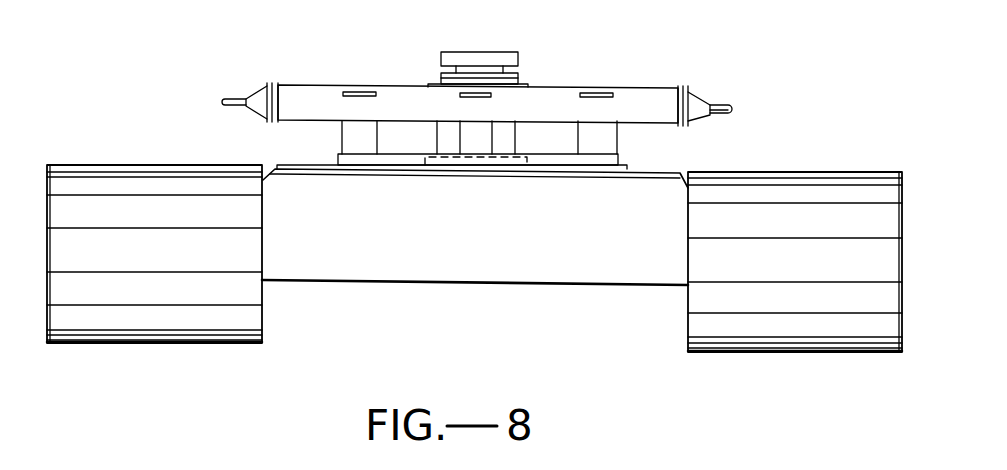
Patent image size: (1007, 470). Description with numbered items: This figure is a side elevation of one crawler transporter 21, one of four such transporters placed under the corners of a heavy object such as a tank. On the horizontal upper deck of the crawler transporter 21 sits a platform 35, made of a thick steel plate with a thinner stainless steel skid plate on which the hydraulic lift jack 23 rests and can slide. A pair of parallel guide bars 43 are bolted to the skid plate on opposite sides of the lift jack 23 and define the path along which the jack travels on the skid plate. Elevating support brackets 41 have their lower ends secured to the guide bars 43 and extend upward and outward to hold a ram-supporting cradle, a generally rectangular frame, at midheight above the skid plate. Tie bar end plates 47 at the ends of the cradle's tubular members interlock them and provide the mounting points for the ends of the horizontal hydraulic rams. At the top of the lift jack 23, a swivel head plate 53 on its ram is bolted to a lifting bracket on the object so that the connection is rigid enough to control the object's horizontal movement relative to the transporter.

The crawler transporter 21 is at (559, 335).
The lift jack 23 is at (518, 78).
The platform 35 is at (673, 169).
The support bracket 41 is at (350, 134).
The guide bar 43 is at (620, 163).
The tie bar end plate 47 is at (725, 106).
The swivel head plate 53 is at (518, 57).